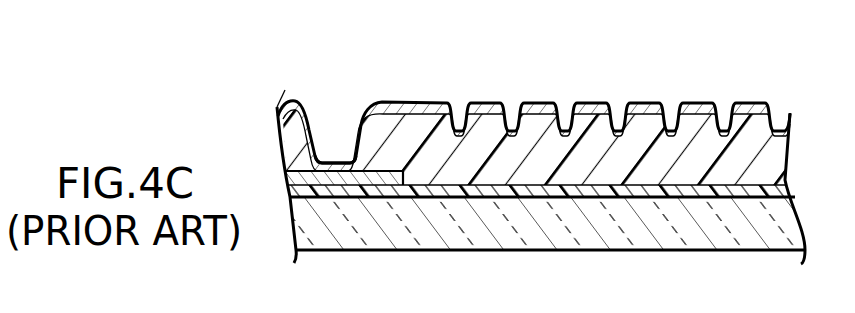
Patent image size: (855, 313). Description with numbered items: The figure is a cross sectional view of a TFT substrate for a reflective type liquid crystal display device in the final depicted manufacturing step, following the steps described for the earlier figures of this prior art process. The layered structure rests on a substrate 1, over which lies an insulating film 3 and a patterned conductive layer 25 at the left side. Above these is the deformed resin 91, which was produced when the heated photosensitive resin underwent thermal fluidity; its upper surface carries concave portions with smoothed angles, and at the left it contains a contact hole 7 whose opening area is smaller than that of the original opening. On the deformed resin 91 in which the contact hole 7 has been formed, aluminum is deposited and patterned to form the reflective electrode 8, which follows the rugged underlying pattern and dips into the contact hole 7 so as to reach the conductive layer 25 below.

The substrate 1 is at (716, 240).
The gate insulating film 3 is at (598, 198).
The drain electrode 25 is at (352, 186).
The contact hole 7 is at (332, 148).
The reflective electrode 8 is at (533, 109).
The deformed resin 91 is at (692, 129).